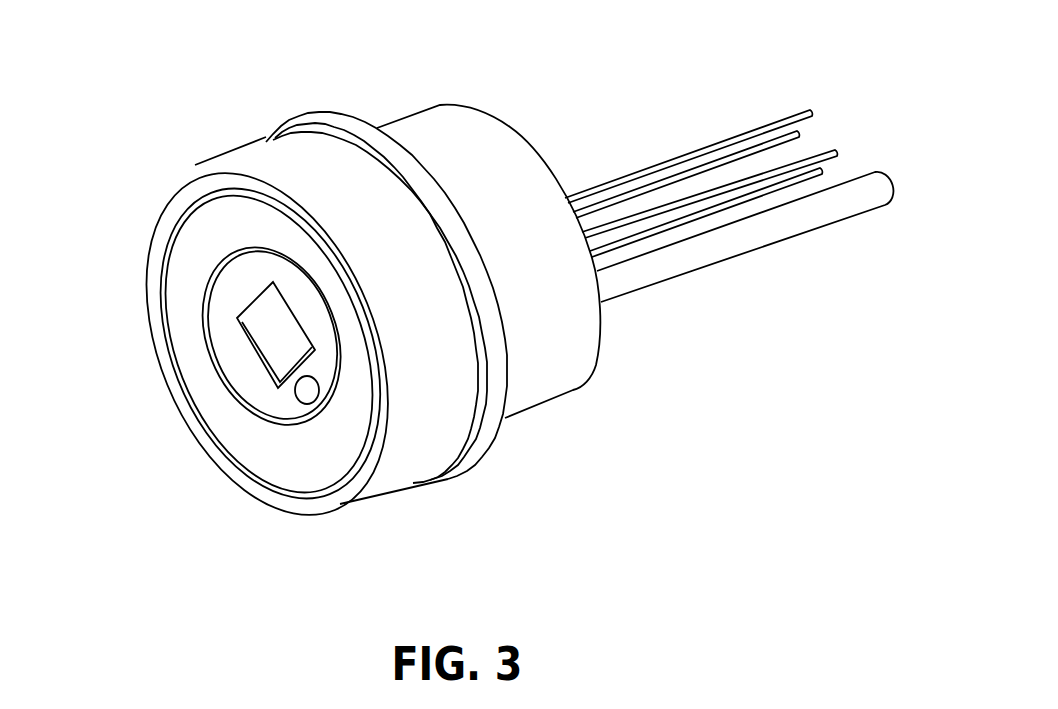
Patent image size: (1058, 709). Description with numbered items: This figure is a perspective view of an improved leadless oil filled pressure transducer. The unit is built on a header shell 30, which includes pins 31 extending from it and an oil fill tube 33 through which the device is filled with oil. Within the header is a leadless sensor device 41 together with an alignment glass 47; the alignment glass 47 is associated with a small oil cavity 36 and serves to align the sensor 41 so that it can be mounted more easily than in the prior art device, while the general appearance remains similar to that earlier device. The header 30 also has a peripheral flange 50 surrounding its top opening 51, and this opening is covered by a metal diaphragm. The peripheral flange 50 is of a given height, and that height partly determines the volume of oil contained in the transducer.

The header shell 30 is at (345, 108).
The pins 31 is at (672, 142).
The oil fill tube 33 is at (661, 292).
The small oil cavity 36 is at (308, 418).
The leadless sensor device 41 is at (266, 344).
The alignment glass 47 is at (232, 322).
The peripheral flange 50 is at (190, 165).
The top opening 51 is at (138, 232).